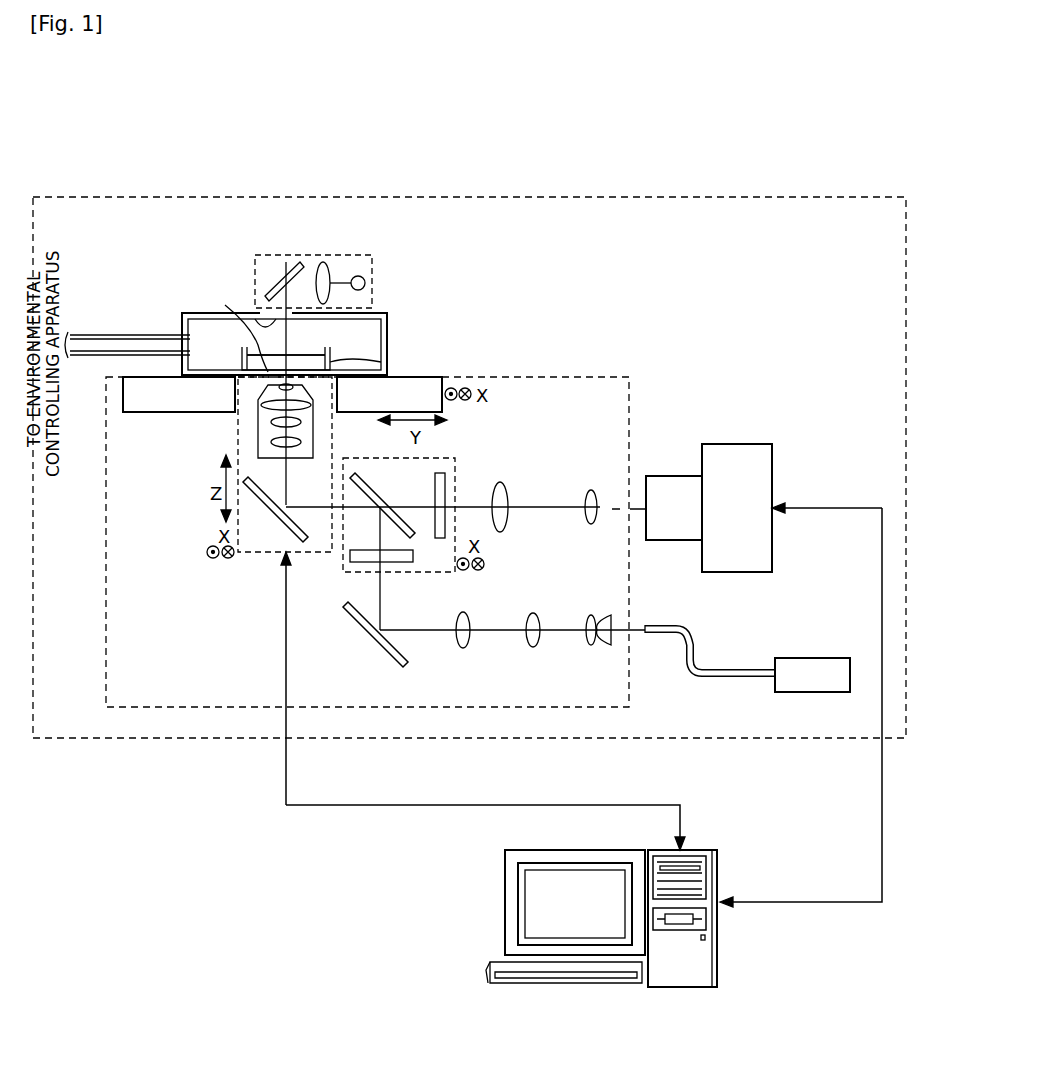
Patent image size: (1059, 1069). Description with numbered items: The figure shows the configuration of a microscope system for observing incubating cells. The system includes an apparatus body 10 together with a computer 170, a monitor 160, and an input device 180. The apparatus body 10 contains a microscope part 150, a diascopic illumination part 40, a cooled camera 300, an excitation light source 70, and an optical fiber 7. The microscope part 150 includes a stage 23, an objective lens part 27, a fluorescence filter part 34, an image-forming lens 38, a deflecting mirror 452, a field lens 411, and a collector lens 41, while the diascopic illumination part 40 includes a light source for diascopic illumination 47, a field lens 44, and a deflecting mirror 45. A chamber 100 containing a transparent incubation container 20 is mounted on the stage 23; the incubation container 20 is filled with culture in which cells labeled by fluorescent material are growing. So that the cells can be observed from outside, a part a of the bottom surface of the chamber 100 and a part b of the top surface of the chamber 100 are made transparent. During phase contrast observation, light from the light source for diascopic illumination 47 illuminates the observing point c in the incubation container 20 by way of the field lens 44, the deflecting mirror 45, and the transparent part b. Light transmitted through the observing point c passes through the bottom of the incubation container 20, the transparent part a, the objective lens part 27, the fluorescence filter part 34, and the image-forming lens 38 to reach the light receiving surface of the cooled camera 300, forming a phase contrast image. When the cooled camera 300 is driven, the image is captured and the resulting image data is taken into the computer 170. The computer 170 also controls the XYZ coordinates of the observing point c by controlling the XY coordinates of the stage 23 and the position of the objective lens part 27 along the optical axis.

The apparatus body 10 is at (855, 197).
The chamber 100 is at (186, 313).
The incubation container 20 is at (387, 368).
The stage 23 is at (157, 412).
The objective lens part 27 is at (252, 560).
The fluorescence filter part 34 is at (455, 463).
The image-forming lens 38 is at (493, 480).
The diascopic illumination part 40 is at (372, 275).
The collector lens 41 is at (617, 612).
The field lens 411 is at (455, 612).
The field lens 44 is at (322, 262).
The deflecting mirror 45 is at (283, 262).
The light source for diascopic illumination 47 is at (357, 275).
The deflecting mirror 452 is at (376, 635).
The optical fiber 7 is at (734, 668).
The excitation light source 70 is at (805, 658).
The microscope part 150 is at (600, 377).
The monitor 160 is at (505, 905).
The computer 170 is at (722, 962).
The input device 180 is at (490, 970).
The cooled camera 300 is at (702, 444).
The transparent part of bottom surface a is at (240, 330).
The transparent part of top surface b is at (268, 322).
The observing point c is at (296, 352).